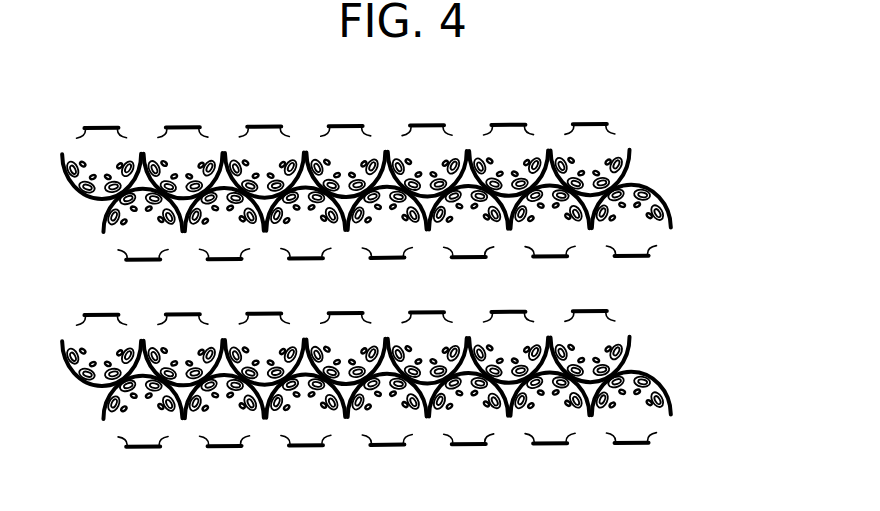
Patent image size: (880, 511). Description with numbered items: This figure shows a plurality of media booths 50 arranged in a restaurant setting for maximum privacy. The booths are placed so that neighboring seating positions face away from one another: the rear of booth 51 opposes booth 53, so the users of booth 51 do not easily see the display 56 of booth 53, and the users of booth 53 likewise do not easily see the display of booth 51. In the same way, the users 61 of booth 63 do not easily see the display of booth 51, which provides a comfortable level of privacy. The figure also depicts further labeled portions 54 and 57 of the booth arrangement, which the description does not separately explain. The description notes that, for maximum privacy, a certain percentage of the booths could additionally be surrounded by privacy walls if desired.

The booths 50 is at (672, 105).
The display 56 is at (586, 122).
The booth 53 is at (636, 158).
The booth 51 is at (673, 213).
The cords 54 is at (661, 222).
The rubber strip 57 is at (384, 298).
The users 61 is at (388, 342).
The booth 63 is at (421, 384).